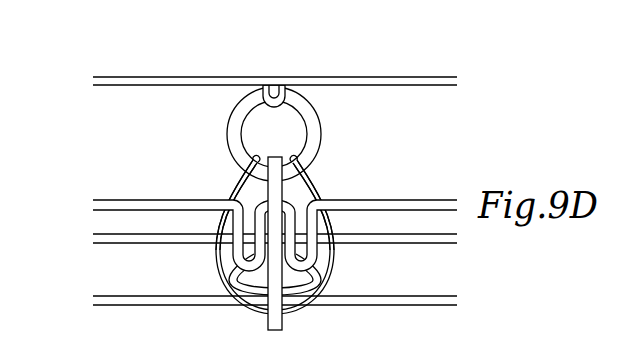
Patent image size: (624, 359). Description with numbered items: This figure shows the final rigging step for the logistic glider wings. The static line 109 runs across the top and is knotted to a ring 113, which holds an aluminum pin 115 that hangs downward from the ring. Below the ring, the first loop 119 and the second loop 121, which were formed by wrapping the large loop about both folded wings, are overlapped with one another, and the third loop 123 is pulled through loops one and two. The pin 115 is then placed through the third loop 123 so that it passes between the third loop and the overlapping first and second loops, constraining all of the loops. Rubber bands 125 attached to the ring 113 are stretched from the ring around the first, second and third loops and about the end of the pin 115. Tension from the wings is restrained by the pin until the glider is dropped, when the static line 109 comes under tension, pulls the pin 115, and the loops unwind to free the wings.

The static line 109 is at (417, 77).
The ring 113 is at (318, 130).
The aluminum pin 115 is at (282, 321).
The first loop end 119 is at (132, 296).
The second loop 121 is at (417, 297).
The third loop 123 is at (305, 172).
The rubber bands 125 is at (230, 185).